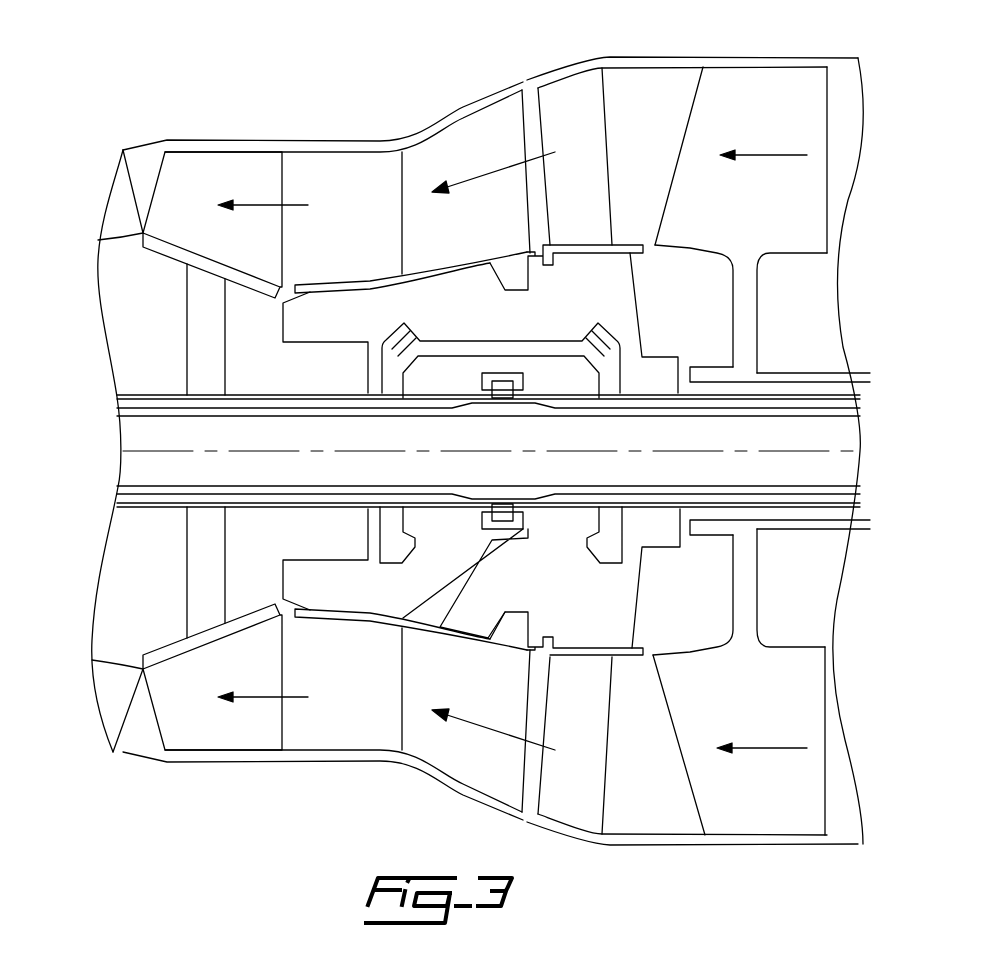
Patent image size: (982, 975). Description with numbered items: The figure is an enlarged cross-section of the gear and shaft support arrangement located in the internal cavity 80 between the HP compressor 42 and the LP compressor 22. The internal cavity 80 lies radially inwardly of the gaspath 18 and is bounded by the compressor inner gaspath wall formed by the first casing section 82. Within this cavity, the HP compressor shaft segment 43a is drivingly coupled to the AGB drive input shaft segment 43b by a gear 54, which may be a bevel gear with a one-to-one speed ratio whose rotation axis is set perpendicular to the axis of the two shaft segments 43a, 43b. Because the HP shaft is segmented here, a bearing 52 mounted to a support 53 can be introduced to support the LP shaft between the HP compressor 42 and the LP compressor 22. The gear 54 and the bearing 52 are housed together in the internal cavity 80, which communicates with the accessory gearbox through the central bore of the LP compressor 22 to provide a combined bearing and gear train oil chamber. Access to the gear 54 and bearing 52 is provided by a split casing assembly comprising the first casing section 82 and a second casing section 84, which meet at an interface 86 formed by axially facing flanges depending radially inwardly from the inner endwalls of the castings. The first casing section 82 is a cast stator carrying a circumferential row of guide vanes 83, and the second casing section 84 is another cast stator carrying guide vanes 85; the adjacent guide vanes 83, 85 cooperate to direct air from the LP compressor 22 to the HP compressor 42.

The gaspath 18 is at (533, 128).
The LP compressor 22 is at (787, 107).
The HP compressor 42 is at (240, 175).
The HP compressor shaft segment 43a is at (330, 393).
The AGB drive input shaft segment 43b is at (830, 390).
The bearing 52 is at (527, 520).
The support 53 is at (465, 574).
The gear 54 is at (522, 331).
The internal cavity 80 is at (433, 277).
The first casing section 82 is at (373, 280).
The guide vanes 83 is at (415, 150).
The second casing section 84 is at (640, 310).
The guide vanes 85 is at (572, 103).
The interface 86 is at (527, 275).